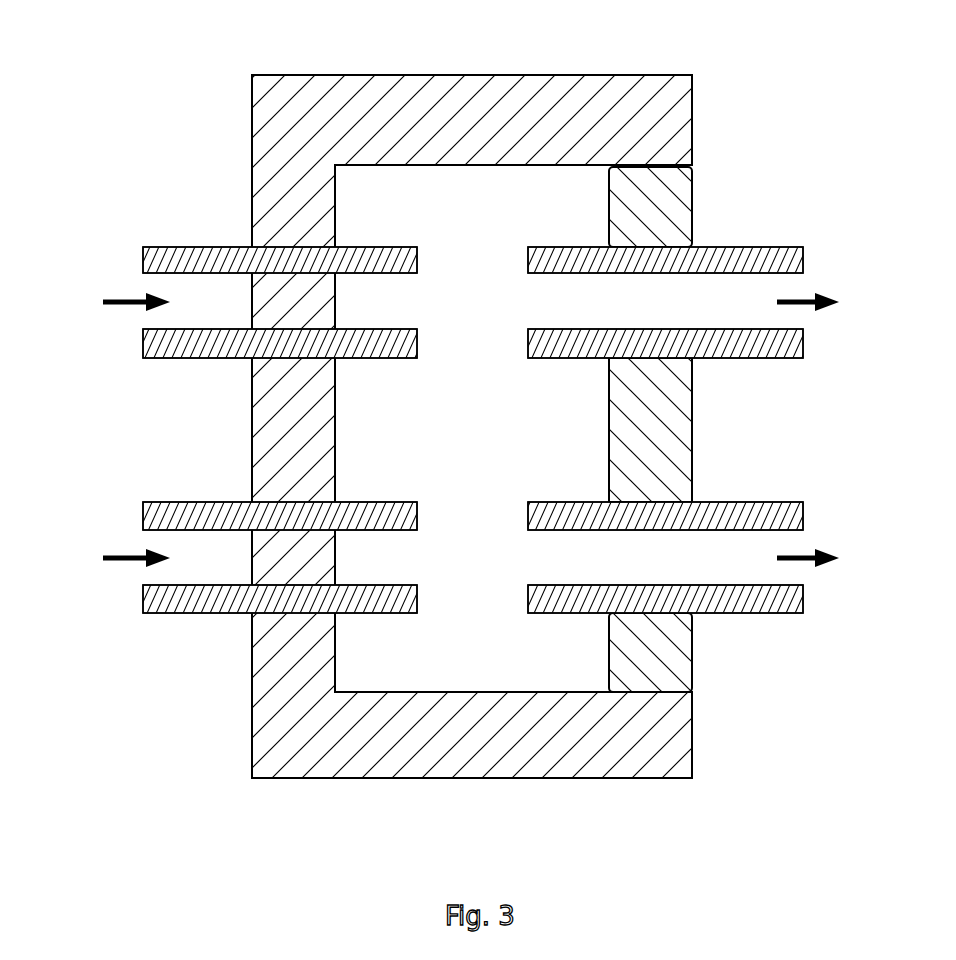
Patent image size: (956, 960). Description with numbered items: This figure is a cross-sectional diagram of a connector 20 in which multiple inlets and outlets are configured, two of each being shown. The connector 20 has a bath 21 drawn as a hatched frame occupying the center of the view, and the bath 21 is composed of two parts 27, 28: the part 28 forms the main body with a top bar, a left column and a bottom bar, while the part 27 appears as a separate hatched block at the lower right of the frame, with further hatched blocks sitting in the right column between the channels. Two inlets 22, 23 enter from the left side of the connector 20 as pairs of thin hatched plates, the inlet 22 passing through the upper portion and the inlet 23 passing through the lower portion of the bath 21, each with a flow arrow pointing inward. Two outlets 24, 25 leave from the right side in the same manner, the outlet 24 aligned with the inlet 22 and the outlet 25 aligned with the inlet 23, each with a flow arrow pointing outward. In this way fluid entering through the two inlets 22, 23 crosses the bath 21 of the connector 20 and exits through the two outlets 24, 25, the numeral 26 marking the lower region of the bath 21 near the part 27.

The connector 20 is at (445, 397).
The bath 21 is at (705, 104).
The inlet 22 is at (200, 247).
The inlet 23 is at (198, 502).
The outlet 24 is at (750, 247).
The outlet 25 is at (753, 502).
The bottom portion of body 26 is at (455, 635).
The bath part 27 is at (691, 637).
The bath part 28 is at (423, 412).